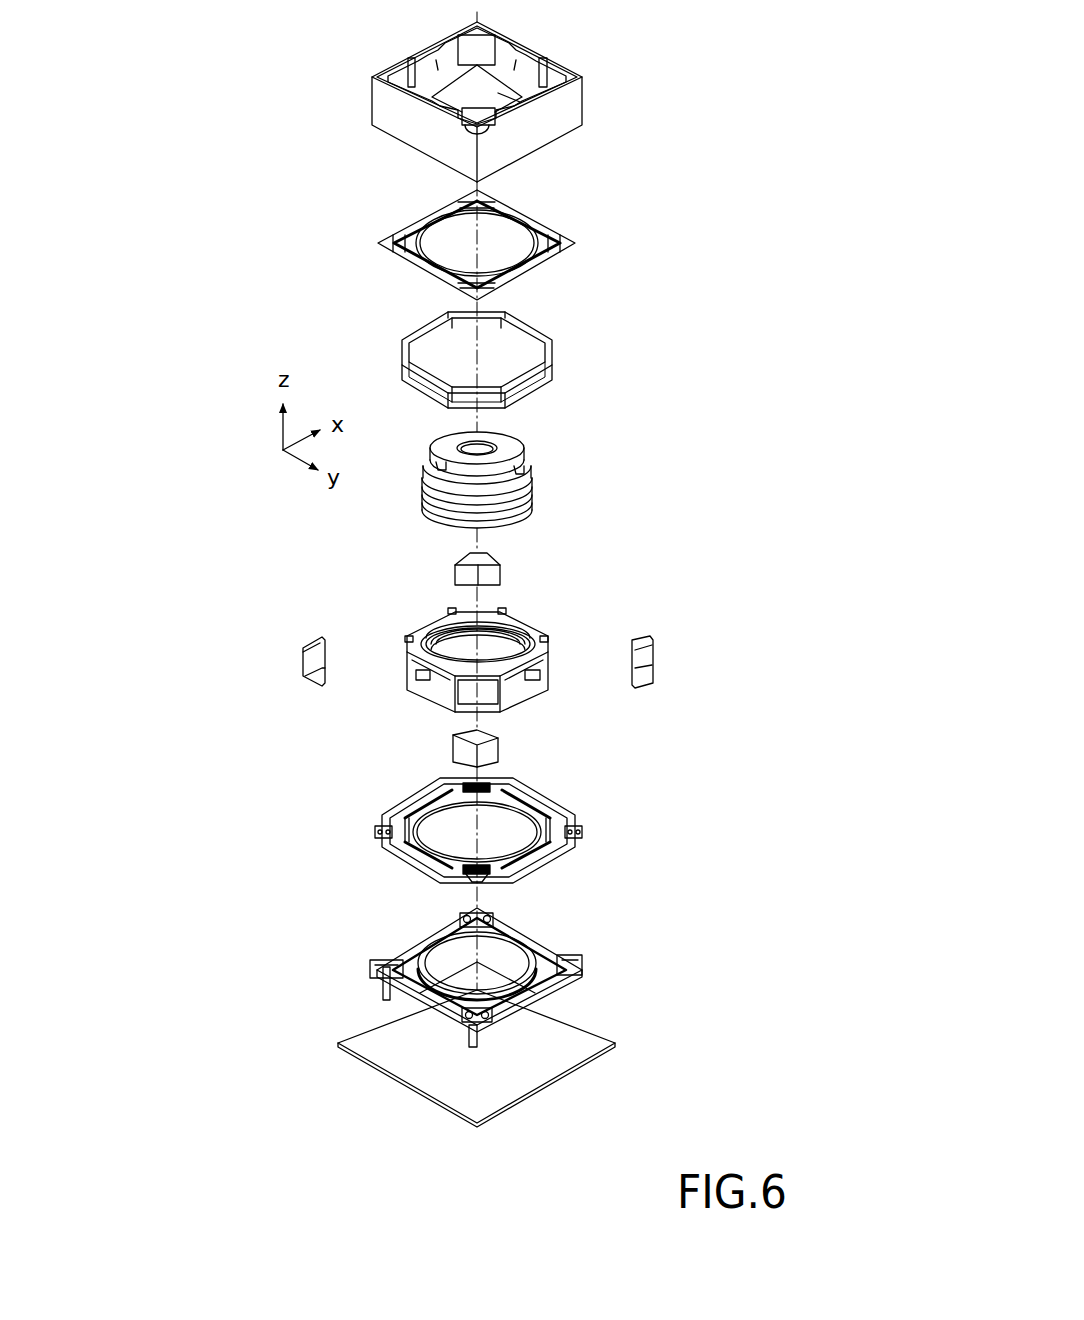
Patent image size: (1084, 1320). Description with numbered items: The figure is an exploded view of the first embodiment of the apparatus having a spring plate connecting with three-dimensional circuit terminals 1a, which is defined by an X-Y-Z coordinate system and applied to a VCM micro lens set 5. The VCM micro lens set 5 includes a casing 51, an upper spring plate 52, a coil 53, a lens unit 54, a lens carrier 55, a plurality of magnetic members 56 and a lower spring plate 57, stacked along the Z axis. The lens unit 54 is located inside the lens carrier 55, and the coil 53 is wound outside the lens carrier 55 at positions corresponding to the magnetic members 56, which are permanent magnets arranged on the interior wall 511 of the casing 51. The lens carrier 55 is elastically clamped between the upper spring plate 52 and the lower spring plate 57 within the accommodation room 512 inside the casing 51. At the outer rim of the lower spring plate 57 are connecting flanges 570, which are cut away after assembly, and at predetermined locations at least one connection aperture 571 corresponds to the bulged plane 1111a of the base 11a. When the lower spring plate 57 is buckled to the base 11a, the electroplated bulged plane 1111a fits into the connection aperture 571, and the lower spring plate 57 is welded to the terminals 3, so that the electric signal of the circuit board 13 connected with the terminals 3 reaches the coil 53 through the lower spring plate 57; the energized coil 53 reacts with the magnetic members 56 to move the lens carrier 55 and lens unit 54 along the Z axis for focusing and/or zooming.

The VCM micro lens set 5 is at (717, 175).
The casing 51 is at (518, 102).
The interior wall 511 is at (530, 63).
The accommodation room 512 is at (498, 93).
The upper spring plate 52 is at (530, 213).
The coil 53 is at (550, 335).
The lens unit 54 is at (527, 447).
The lens carrier 55 is at (507, 617).
The magnetic members 56 is at (500, 573).
The lower spring plate 57 is at (482, 834).
The connecting flanges 570 is at (427, 787).
The connection aperture 571 is at (393, 835).
The apparatus having a spring plate connecting with 3D circuit terminals 1a is at (327, 953).
The base 11a is at (410, 940).
The bulged plane 1111a is at (380, 968).
The terminals 3 is at (473, 1028).
The circuit board 13 is at (567, 1063).